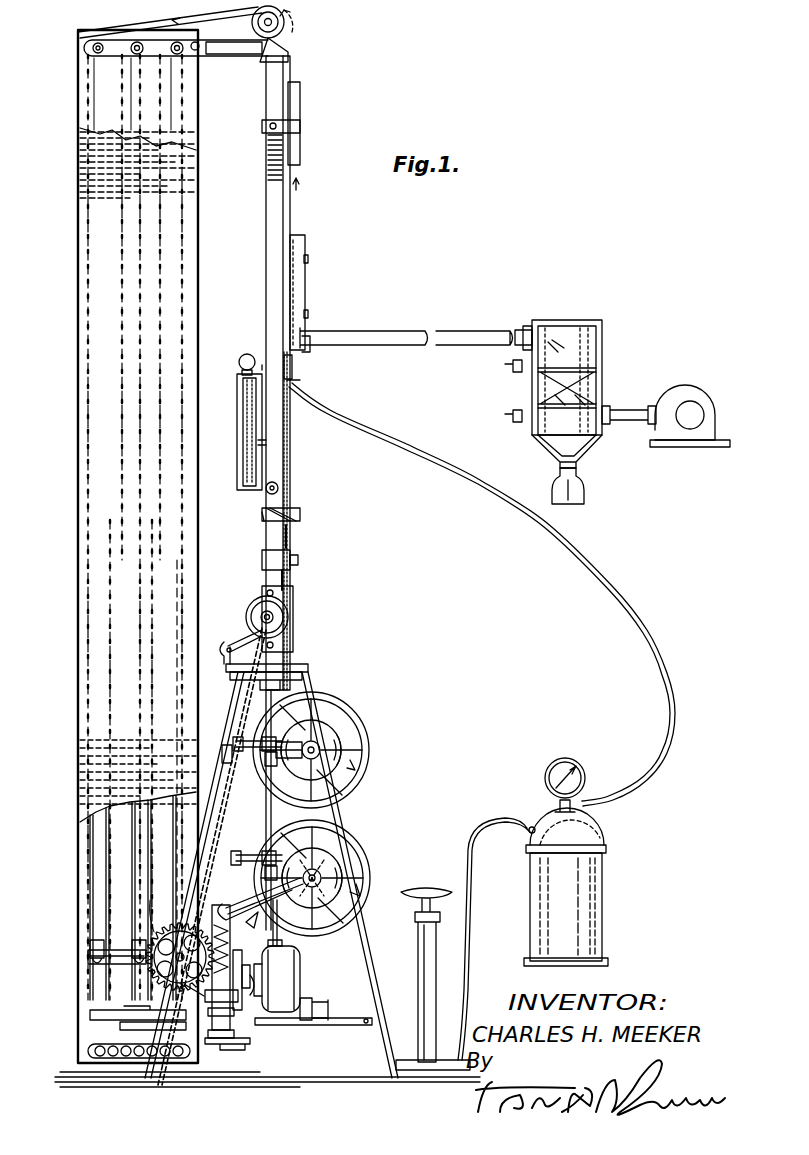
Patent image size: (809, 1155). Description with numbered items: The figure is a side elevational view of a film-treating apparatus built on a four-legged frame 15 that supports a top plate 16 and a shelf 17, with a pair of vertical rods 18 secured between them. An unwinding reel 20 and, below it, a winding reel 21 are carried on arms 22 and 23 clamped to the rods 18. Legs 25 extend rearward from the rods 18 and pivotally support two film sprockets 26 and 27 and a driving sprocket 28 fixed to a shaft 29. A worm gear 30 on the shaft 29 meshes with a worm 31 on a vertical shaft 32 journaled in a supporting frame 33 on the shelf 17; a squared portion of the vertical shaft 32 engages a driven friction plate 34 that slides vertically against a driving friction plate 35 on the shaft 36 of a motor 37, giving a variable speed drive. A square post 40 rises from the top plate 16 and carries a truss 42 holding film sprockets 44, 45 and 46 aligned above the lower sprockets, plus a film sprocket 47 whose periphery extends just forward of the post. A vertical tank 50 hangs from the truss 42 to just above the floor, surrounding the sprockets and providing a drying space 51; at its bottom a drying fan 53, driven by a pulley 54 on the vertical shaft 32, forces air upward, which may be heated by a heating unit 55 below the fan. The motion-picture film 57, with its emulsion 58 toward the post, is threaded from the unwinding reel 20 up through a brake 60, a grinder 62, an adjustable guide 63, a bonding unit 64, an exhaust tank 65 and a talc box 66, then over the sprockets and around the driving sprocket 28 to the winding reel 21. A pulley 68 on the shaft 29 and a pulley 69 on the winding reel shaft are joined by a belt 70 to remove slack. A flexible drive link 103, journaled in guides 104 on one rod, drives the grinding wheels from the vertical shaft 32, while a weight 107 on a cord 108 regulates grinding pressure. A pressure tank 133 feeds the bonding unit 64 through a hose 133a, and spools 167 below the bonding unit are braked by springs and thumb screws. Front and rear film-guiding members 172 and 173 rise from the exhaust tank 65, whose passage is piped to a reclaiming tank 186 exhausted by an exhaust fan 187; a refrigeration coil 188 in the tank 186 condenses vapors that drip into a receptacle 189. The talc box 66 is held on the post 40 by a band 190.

The frame 15 is at (348, 822).
The top plate 16 is at (302, 667).
The shelf 17 is at (364, 1028).
The vertical rods 18 is at (322, 697).
The unwinding reel 20 is at (312, 748).
The winding reel 21 is at (356, 856).
The arm 22 is at (300, 722).
The arm 23 is at (296, 860).
The legs 25 is at (92, 960).
The film sprocket 26 is at (92, 950).
The film sprocket 27 is at (92, 948).
The driving sprocket 28 is at (145, 962).
The shaft 29 is at (150, 988).
The worm gear 30 is at (160, 902).
The worm 31 is at (250, 972).
The vertical shaft 32 is at (256, 920).
The supporting frame 33 is at (236, 1010).
The driven friction plate 34 is at (214, 1050).
The driving friction plate 35 is at (254, 1000).
The shaft 36 is at (278, 1020).
The motor 37 is at (300, 990).
The square post 40 is at (290, 175).
The truss 42 is at (220, 52).
The film sprocket 44 is at (136, 56).
The film sprocket 45 is at (176, 58).
The film sprocket 46 is at (194, 56).
The film sprocket 47 is at (284, 30).
The vertical tank 50 is at (88, 706).
The drying space 51 is at (112, 852).
The drying fan 53 is at (92, 1018).
The pulley 54 is at (236, 1076).
The heating unit 55 is at (90, 1052).
The motion-picture film 57 is at (296, 540).
The emulsion 58 is at (292, 580).
The brake 60 is at (304, 679).
The grinder 62 is at (287, 637).
The adjustable guide 63 is at (298, 558).
The bonding unit 64 is at (262, 470).
The exhaust tank 65 is at (306, 290).
The talc box 66 is at (300, 112).
The pulley 68 is at (158, 1082).
The pulley 69 is at (346, 880).
The belt 70 is at (279, 928).
The flexible drive link 103 is at (252, 790).
The guides 104 is at (246, 853).
The weight 107 is at (224, 756).
The cord 108 is at (246, 642).
The pressure tank 133 is at (586, 896).
The hose 133a is at (676, 660).
The spool 167 is at (292, 510).
The front film-guiding member 172 is at (292, 380).
The rear film-guiding member 173 is at (284, 424).
The reclaiming tank 186 is at (570, 330).
The exhaust fan 187 is at (684, 392).
The refrigeration coil 188 is at (582, 376).
The receptacle 189 is at (575, 488).
The band 190 is at (302, 127).